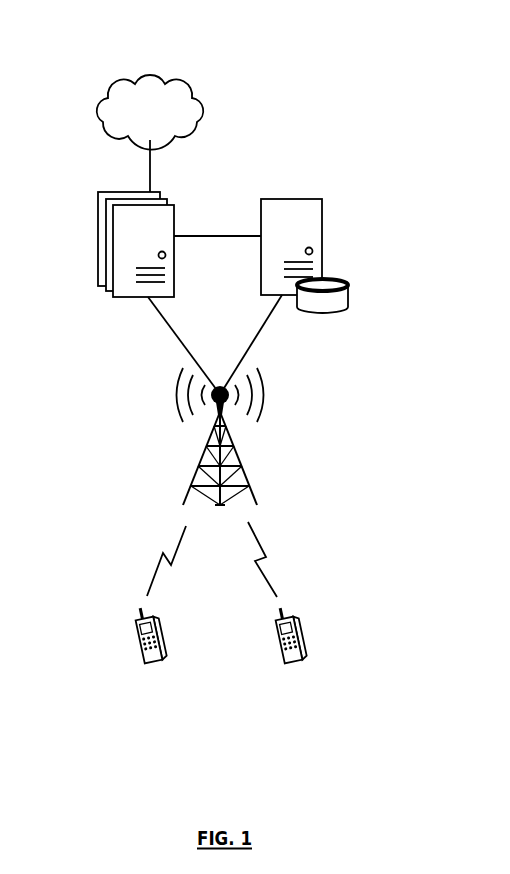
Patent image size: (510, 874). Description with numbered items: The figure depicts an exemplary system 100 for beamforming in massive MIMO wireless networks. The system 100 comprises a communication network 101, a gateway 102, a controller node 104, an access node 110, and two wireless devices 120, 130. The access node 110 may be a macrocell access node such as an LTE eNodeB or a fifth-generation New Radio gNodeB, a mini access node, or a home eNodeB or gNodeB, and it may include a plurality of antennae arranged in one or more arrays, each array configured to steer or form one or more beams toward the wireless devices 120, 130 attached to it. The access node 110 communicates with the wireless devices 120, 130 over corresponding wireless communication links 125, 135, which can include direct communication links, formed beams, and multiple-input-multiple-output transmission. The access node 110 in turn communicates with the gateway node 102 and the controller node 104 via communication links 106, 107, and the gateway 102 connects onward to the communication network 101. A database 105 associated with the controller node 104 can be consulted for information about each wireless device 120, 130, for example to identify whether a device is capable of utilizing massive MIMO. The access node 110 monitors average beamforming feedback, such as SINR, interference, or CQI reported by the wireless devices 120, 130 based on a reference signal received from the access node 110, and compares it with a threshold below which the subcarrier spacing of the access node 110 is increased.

The system 100 is at (335, 50).
The communication network 101 is at (165, 118).
The gateway 102 is at (118, 192).
The controller node 104 is at (317, 199).
The database 105 is at (344, 280).
The communication link 106 is at (258, 332).
The communication link 107 is at (165, 322).
The access node 110 is at (200, 468).
The wireless device 120 is at (146, 662).
The wireless communication link 125 is at (155, 574).
The wireless device 130 is at (286, 662).
The wireless communication link 135 is at (266, 575).